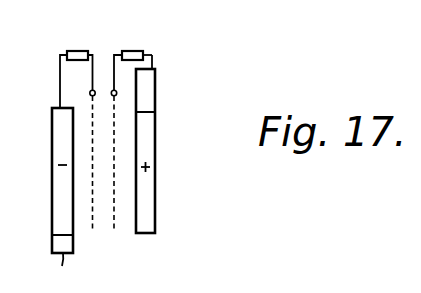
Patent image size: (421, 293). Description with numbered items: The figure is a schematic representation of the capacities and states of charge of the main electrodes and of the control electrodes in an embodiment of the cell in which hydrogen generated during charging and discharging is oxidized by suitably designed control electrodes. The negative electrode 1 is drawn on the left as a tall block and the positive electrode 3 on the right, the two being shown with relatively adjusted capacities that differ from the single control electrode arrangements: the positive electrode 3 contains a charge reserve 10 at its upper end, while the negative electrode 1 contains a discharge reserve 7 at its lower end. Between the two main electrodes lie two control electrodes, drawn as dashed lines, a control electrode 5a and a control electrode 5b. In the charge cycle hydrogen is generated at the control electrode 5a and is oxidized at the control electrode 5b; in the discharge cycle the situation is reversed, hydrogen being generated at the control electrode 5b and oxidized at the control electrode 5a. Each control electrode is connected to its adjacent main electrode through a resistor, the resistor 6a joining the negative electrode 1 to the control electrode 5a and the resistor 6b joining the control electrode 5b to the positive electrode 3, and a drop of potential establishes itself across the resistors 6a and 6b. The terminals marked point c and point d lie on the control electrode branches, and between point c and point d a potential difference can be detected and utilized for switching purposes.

The negative electrode 1 is at (52, 188).
The positive electrode 3 is at (156, 185).
The control electrode 5a is at (88, 178).
The control electrode 5b is at (118, 177).
The resistor 6a is at (78, 48).
The resistor 6b is at (136, 48).
The discharge reserve 7 is at (61, 273).
The charge reserve 10 is at (156, 90).
The point c is at (86, 93).
The point d is at (119, 94).